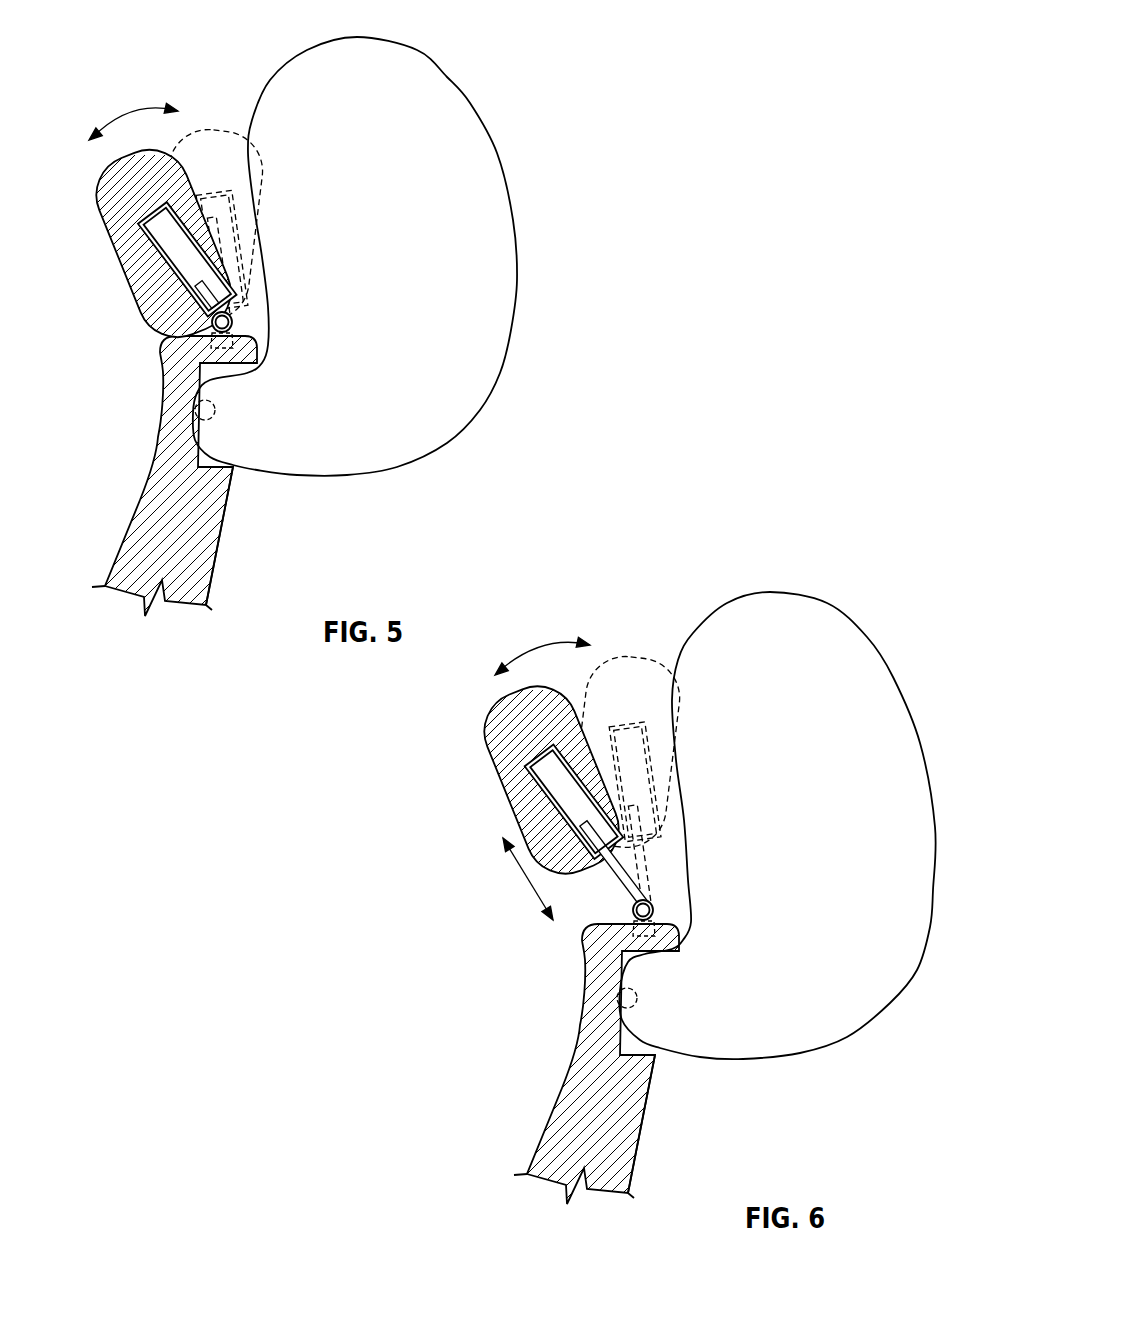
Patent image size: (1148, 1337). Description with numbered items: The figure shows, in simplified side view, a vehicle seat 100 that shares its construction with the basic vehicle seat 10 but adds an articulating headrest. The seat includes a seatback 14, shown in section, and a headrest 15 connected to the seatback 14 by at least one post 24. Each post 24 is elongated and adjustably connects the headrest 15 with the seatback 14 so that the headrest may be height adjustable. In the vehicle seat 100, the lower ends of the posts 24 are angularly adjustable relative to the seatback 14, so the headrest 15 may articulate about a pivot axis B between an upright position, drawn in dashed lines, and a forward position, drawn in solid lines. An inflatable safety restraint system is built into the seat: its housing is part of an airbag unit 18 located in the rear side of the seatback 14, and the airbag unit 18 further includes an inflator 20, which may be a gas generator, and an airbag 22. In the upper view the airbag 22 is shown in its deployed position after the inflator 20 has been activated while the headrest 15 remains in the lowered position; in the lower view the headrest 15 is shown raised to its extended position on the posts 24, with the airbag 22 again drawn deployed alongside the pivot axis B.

In FIG. 5, the vehicle seat 100 is at (522, 38).
In FIG. 6, the vehicle seat 100 is at (861, 569).
In FIG. 5, the vehicle seat 10 is at (88, 569).
In FIG. 6, the vehicle seat 10 is at (510, 1153).
In FIG. 5, the seatback 14 is at (138, 538).
In FIG. 6, the seatback 14 is at (560, 1108).
In FIG. 5, the headrest 15 is at (106, 233).
In FIG. 6, the headrest 15 is at (492, 735).
In FIG. 5, the airbag unit 18 is at (244, 480).
In FIG. 6, the airbag unit 18 is at (683, 1087).
In FIG. 5, the inflator 20 is at (195, 403).
In FIG. 6, the inflator 20 is at (605, 1025).
In FIG. 5, the airbag 22 is at (517, 283).
In FIG. 6, the airbag 22 is at (895, 678).
In FIG. 5, the post 24 is at (186, 268).
In FIG. 6, the post 24 is at (613, 864).
In FIG. 5, the pivot axis B is at (208, 326).
In FIG. 6, the pivot axis B is at (632, 908).